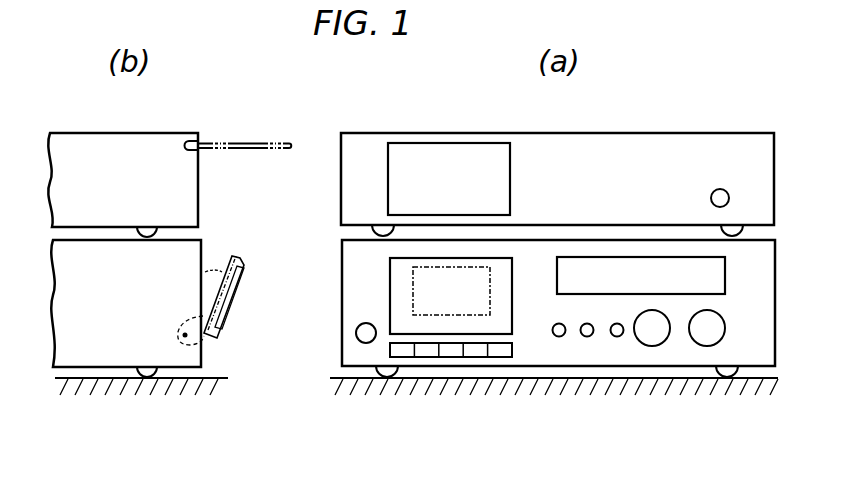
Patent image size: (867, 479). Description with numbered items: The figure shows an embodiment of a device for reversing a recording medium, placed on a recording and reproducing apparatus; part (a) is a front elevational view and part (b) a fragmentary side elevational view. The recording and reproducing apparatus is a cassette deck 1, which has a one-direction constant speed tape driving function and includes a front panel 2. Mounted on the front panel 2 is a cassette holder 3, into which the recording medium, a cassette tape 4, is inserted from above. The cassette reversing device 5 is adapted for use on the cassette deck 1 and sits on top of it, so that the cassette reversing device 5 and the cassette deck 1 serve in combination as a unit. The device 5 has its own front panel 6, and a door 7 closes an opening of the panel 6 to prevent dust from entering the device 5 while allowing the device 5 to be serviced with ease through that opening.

The cassette deck 1 is at (319, 241).
The front panel 2 is at (353, 333).
The cassette holder 3 is at (226, 318).
The cassette tape 4 is at (232, 250).
The cassette reversing device 5 is at (366, 124).
The front panel 6 is at (676, 142).
The door 7 is at (235, 143).